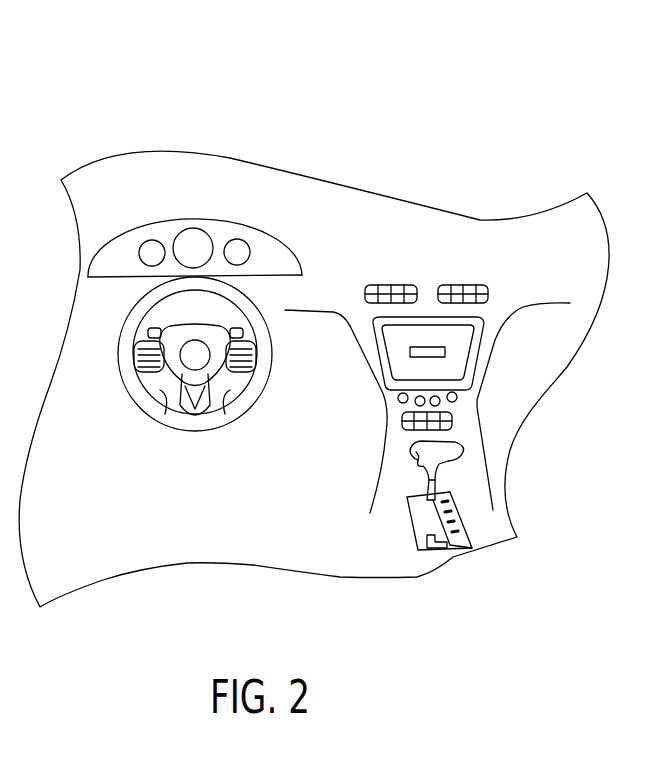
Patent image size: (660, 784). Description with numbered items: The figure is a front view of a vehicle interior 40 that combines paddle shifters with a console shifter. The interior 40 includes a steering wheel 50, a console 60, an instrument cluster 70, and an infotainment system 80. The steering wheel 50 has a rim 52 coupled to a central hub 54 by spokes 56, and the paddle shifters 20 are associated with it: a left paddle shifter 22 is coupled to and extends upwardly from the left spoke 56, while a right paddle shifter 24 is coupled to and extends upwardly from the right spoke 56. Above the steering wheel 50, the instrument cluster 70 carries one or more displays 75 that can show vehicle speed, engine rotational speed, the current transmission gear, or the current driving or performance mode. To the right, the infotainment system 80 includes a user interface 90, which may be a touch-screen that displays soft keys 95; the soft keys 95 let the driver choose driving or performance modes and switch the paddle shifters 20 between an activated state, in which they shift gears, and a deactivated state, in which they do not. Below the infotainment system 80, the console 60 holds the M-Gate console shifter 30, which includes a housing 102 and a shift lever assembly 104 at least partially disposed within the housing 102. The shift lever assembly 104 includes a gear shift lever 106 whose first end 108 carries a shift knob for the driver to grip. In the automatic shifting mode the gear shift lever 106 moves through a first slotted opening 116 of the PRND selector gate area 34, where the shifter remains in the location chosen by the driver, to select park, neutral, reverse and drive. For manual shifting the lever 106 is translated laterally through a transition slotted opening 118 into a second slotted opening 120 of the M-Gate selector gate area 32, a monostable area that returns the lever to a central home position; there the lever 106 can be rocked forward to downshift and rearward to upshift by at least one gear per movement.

The vehicle interior 40 is at (391, 105).
The instrument cluster 70 is at (153, 217).
The displays 75 is at (148, 245).
The steering wheel 50 is at (179, 389).
The rim 52 is at (143, 405).
The hub 54 is at (195, 355).
The spokes 56 is at (157, 370).
The paddle shifters 20 is at (174, 276).
The left paddle shifter 22 is at (147, 333).
The right paddle shifter 24 is at (244, 333).
The infotainment system 80 is at (493, 309).
The soft keys 95 is at (404, 293).
The user interface 90 is at (409, 368).
The first end 108 is at (465, 427).
The console 60 is at (571, 396).
The M-Gate console shifter 30 is at (452, 536).
The gear shift lever 106 is at (430, 488).
The shift lever assembly 104 is at (468, 469).
The selector gate area 34 is at (417, 520).
The housing 102 is at (468, 536).
The second slotted opening 120 is at (409, 545).
The M-Gate selector gate area 32 is at (413, 566).
The transition slotted opening 118 is at (433, 549).
The first slotted opening 116 is at (440, 542).